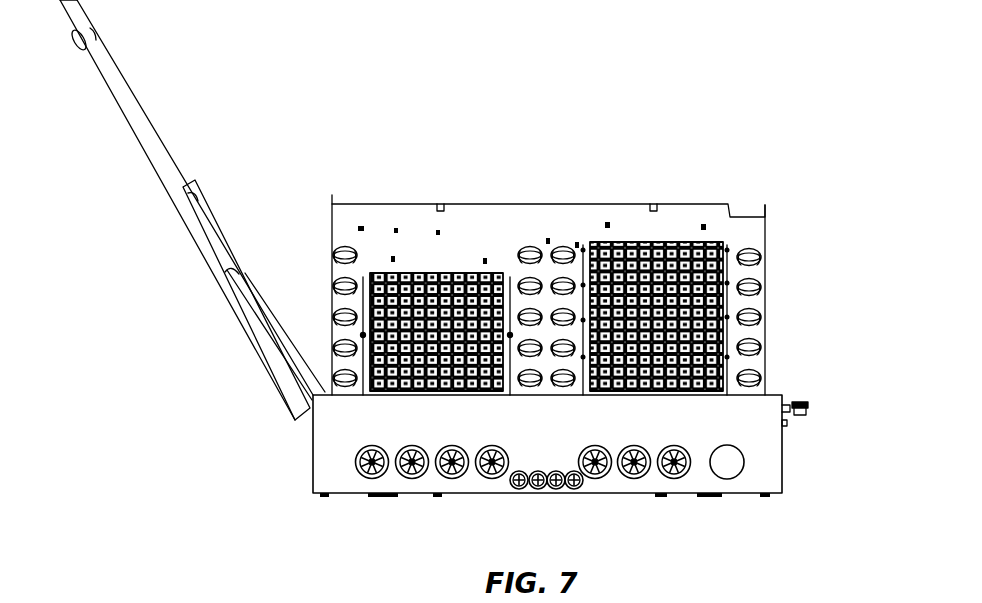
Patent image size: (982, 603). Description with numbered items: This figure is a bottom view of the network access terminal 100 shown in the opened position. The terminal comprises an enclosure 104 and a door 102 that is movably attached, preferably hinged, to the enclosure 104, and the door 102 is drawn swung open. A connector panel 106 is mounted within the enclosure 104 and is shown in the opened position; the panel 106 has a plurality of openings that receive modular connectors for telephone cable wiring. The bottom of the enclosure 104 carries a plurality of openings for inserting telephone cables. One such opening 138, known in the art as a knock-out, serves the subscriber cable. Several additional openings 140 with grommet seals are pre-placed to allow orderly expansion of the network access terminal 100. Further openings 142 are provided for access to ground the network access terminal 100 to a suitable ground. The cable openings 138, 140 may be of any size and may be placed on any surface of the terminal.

The network access terminal 100 is at (818, 86).
The door 102 is at (192, 210).
The enclosure 104 is at (582, 446).
The connector panel 106 is at (548, 271).
The opening 138 is at (779, 497).
The additional openings 140 is at (674, 505).
The further openings 142 is at (584, 505).